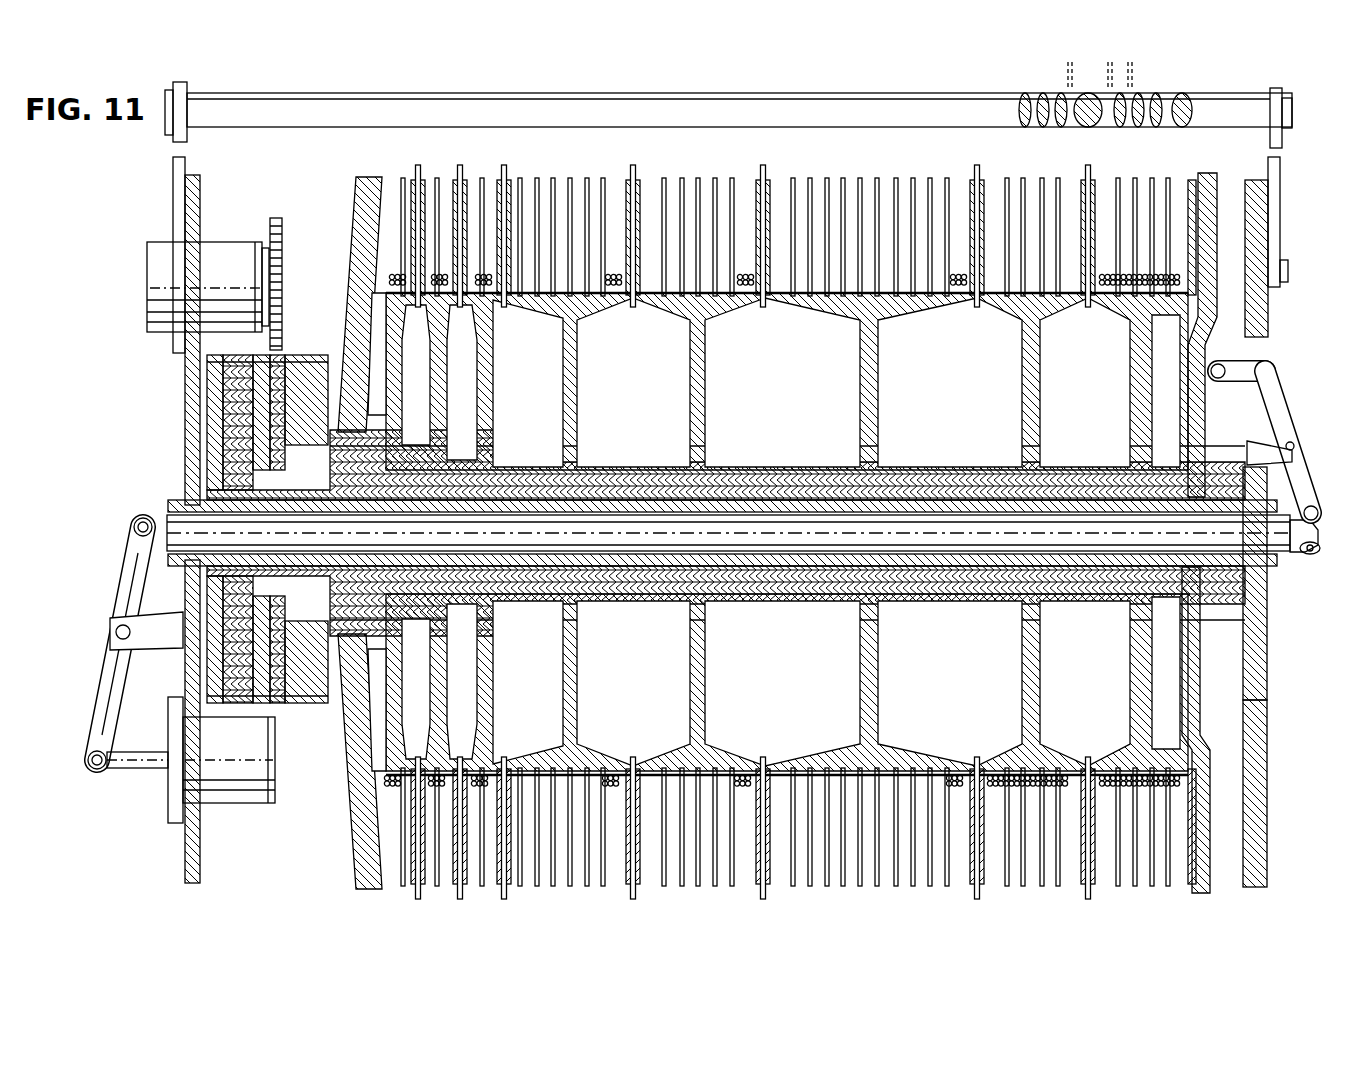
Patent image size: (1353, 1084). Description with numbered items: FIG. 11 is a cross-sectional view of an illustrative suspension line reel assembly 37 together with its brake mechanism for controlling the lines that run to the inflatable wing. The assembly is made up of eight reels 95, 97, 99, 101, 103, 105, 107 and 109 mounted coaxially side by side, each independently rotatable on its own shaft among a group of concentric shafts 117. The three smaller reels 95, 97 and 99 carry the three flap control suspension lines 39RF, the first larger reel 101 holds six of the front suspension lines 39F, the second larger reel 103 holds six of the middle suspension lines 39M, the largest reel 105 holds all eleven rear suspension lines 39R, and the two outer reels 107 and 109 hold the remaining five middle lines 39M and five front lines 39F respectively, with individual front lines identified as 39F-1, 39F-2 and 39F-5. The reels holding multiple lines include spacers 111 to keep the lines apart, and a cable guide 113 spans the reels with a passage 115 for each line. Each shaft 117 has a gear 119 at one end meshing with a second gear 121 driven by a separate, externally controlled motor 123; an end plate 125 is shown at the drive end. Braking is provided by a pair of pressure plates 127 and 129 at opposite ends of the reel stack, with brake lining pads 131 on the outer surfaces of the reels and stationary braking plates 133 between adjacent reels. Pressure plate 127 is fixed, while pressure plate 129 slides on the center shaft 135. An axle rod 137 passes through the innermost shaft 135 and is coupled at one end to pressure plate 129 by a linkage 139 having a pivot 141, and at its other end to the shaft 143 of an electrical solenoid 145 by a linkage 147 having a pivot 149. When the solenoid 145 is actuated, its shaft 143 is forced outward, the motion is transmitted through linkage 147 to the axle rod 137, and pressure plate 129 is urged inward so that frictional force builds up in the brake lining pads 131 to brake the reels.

The cable guide 113 is at (836, 98).
The passage 115 is at (1179, 128).
The concentric shafts 117 is at (597, 606).
The gear 119 is at (212, 418).
The second gear 121 is at (286, 275).
The motor 123 is at (147, 312).
The end plate 125 is at (185, 378).
The pressure plate 127 is at (352, 196).
The pressure plate 129 is at (1256, 330).
The brake lining pad 131 is at (384, 182).
The stationary braking plate 133 is at (415, 896).
The center shaft 135 is at (1222, 572).
The axle rod 137 is at (795, 548).
The linkage 139 is at (1308, 446).
The pivot 141 is at (1287, 430).
The solenoid shaft 143 is at (128, 772).
The electrical solenoid 145 is at (237, 804).
The linkage 147 is at (95, 650).
The pivot 149 is at (115, 614).
The reel assembly 37 is at (782, 659).
The reel 95 is at (356, 695).
The reel 97 is at (447, 660).
The reel 99 is at (478, 693).
The first larger reel 101 is at (563, 631).
The second larger reel 103 is at (695, 657).
The largest reel 105 is at (860, 660).
The outer reel 107 is at (1025, 665).
The outer reel 109 is at (1137, 665).
The spacer 111 is at (565, 887).
The flap control suspension lines 39RF is at (468, 322).
The front suspension lines 39F is at (606, 760).
The fin plate 39F-5 is at (1120, 300).
The fin plate 39F-2 is at (1136, 322).
The fin plate 39F-1 is at (1146, 330).
The middle suspension lines 39M is at (742, 760).
The rear suspension lines 39R is at (960, 760).